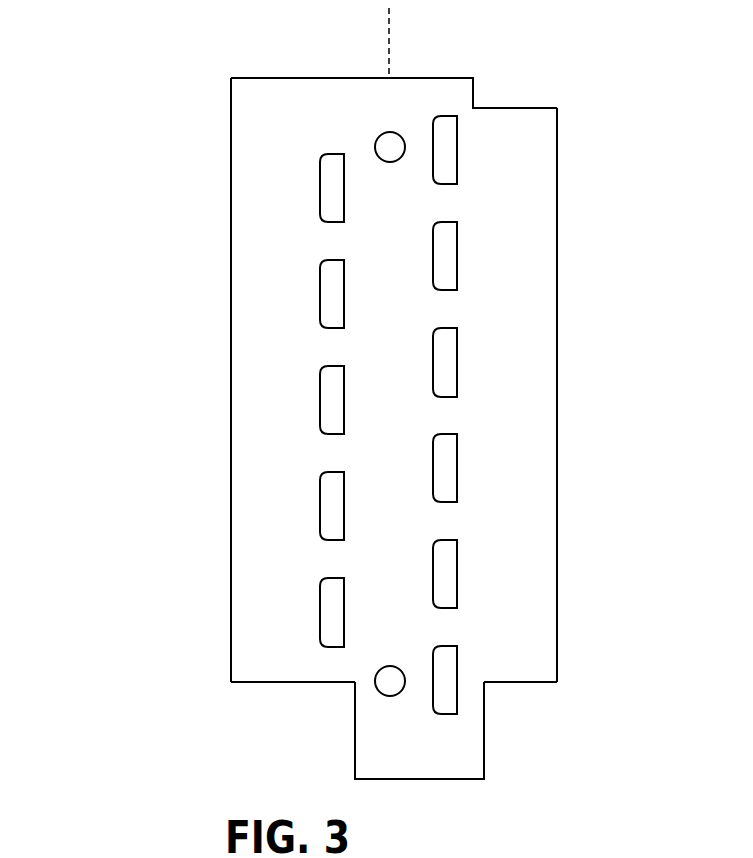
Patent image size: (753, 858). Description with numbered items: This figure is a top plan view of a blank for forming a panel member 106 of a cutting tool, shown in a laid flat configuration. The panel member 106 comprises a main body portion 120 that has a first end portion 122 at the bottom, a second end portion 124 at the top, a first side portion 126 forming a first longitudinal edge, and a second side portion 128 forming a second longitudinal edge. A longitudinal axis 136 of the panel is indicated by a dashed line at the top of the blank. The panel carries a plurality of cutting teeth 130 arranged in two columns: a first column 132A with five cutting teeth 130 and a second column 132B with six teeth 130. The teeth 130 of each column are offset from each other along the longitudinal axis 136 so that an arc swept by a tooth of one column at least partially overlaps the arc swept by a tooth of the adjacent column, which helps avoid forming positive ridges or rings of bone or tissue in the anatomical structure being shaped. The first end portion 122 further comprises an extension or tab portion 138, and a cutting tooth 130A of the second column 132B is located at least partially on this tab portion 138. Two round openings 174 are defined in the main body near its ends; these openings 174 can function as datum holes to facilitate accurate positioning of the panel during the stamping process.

The panel member 106 is at (155, 194).
The main body portion 120 is at (505, 292).
The first end portion 122 is at (282, 703).
The second end portion 124 is at (265, 75).
The first side portion 126 is at (230, 348).
The second side portion 128 is at (557, 347).
The cutting teeth 130 is at (455, 160).
The cutting tooth 130A is at (453, 665).
The first column 132A is at (316, 510).
The second column 132B is at (463, 568).
The longitudinal axis 136 is at (388, 40).
The tab portion 138 is at (484, 730).
The round openings 174 is at (383, 132).